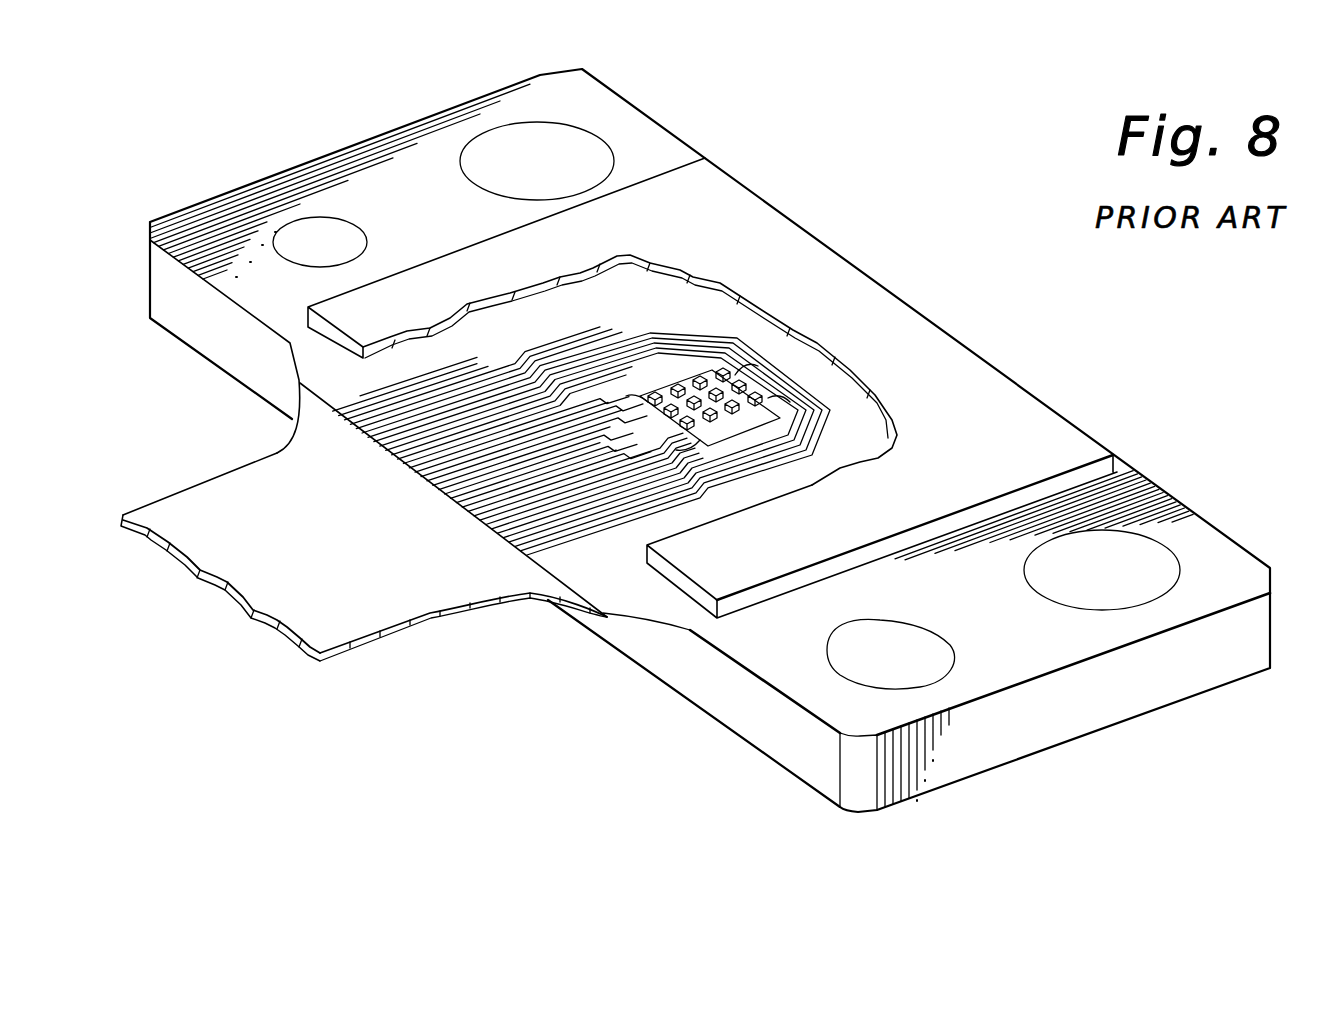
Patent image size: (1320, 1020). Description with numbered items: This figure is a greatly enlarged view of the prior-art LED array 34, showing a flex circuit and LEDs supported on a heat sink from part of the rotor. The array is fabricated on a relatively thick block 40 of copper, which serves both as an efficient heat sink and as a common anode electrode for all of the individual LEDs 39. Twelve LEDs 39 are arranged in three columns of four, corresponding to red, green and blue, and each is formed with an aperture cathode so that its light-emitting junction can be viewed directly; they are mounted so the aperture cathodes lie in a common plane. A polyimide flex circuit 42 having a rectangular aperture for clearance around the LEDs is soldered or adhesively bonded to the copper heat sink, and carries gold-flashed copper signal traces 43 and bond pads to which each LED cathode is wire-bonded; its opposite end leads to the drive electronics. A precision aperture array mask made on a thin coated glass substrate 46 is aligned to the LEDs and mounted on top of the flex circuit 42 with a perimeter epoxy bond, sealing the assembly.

The LED array 34 is at (1056, 341).
The individual LEDs 39 is at (722, 378).
The block of copper 40 is at (388, 178).
The polyimide flex circuit 42 is at (357, 595).
The signal traces 43 is at (560, 523).
The glass substrate 46 is at (723, 212).